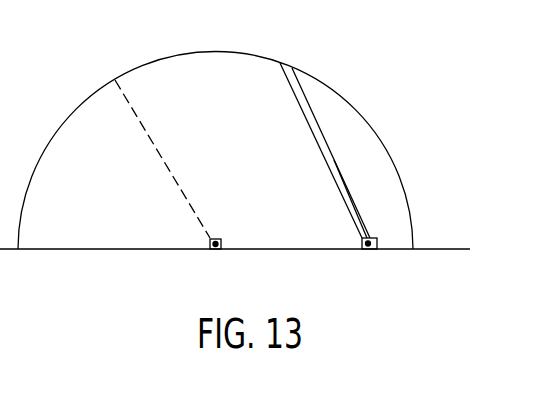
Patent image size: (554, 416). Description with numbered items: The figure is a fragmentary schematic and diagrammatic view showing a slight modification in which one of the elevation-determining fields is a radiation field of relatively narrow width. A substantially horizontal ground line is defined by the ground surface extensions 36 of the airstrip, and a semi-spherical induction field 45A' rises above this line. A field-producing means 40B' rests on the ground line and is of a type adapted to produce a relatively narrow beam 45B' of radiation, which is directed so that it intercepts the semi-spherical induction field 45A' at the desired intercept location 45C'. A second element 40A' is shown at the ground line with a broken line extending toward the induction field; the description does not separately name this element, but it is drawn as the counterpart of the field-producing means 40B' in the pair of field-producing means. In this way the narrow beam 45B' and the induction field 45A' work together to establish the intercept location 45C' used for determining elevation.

The ground surface extension 36 is at (266, 249).
The semi-spherical induction field 45A' is at (215, 150).
The narrow beam of radiation 45B' is at (306, 150).
The intercept location 45C' is at (239, 134).
The left pivot block 40A' is at (209, 264).
The radiation field-producing means 40B' is at (391, 262).